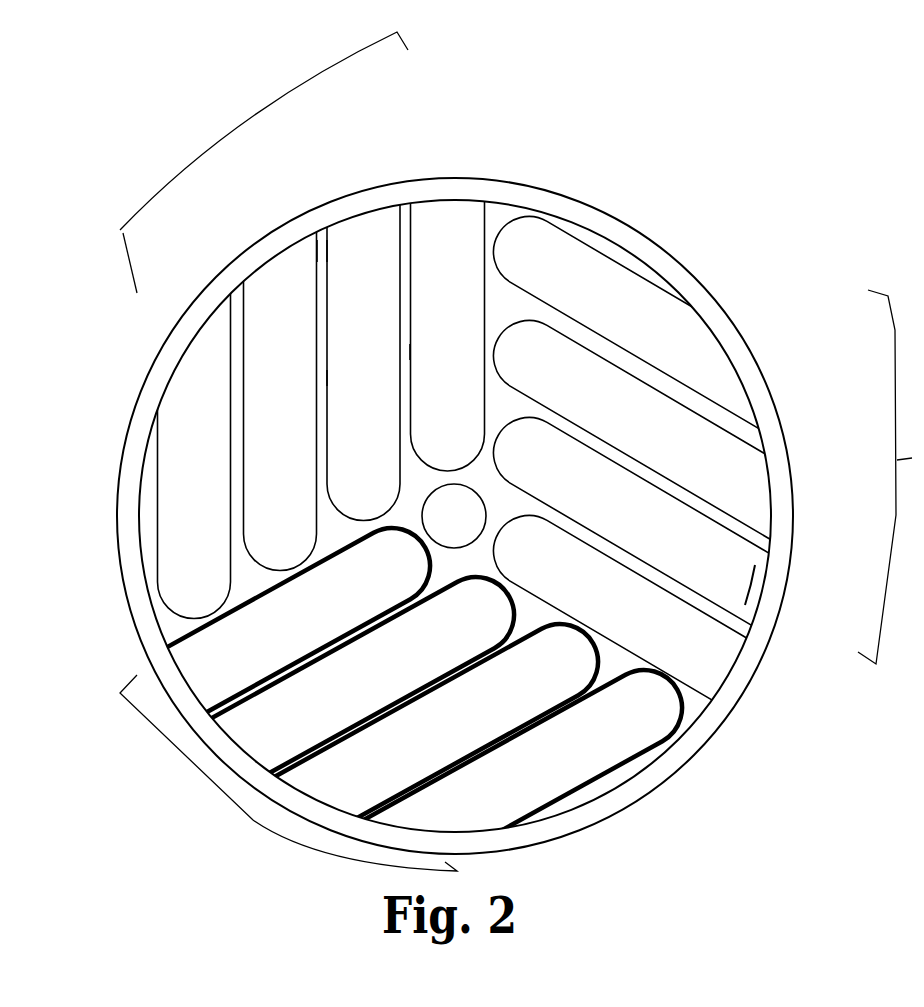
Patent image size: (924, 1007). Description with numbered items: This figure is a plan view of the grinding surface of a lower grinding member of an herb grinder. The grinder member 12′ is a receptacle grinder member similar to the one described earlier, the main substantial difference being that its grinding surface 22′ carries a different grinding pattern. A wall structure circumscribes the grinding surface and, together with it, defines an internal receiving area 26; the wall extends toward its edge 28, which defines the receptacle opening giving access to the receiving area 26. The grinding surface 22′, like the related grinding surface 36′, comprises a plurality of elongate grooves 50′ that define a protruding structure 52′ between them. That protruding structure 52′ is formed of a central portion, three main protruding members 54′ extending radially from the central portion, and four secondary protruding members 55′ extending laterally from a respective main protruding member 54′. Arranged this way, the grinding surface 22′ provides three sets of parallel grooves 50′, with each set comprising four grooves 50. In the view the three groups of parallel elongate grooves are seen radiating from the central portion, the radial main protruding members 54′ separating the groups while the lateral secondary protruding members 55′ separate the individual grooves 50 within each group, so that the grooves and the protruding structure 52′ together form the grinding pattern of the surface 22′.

The grinder member 12′ is at (758, 183).
The grinding surface 22′ is at (366, 233).
The internal receiving area 26 is at (760, 584).
The edge 28 is at (747, 347).
The grinding surface 36′ is at (495, 488).
The groove 50 is at (385, 228).
The elongate grooves 50′ is at (203, 357).
The protruding structure 52′ is at (493, 218).
The main protruding members 54′ is at (500, 307).
The secondary protruding members 55′ is at (327, 378).